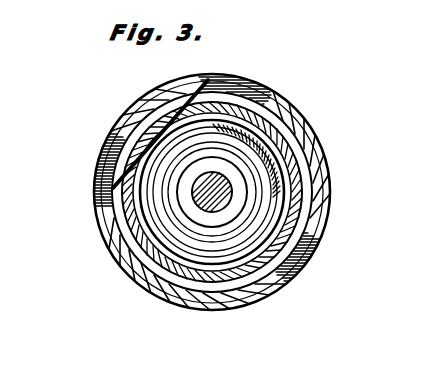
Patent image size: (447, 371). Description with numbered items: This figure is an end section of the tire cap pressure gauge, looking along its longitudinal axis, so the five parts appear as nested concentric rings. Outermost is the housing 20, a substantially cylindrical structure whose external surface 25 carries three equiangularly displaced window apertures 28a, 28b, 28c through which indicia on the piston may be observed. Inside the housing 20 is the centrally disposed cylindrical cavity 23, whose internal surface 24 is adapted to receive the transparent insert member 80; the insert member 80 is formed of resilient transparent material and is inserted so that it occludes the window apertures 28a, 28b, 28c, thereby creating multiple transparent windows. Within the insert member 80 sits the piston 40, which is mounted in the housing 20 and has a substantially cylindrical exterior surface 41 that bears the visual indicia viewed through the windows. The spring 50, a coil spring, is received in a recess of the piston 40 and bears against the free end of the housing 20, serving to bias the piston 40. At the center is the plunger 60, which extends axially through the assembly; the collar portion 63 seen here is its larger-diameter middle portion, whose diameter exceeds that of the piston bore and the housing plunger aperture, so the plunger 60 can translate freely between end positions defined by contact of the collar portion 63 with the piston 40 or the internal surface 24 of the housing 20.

The housing 20 is at (153, 88).
The insert member 80 is at (197, 83).
The cylindrical cavity 23 is at (140, 120).
The window aperture 28a is at (92, 244).
The window aperture 28b is at (282, 80).
The window aperture 28c is at (312, 273).
The internal surface 24 is at (172, 275).
The external surface 25 is at (192, 303).
The plunger 60 is at (265, 265).
The spring 50 is at (300, 207).
The cylindrical exterior surface 41 is at (280, 135).
The piston 40 is at (292, 165).
The collar portion 63 is at (190, 193).